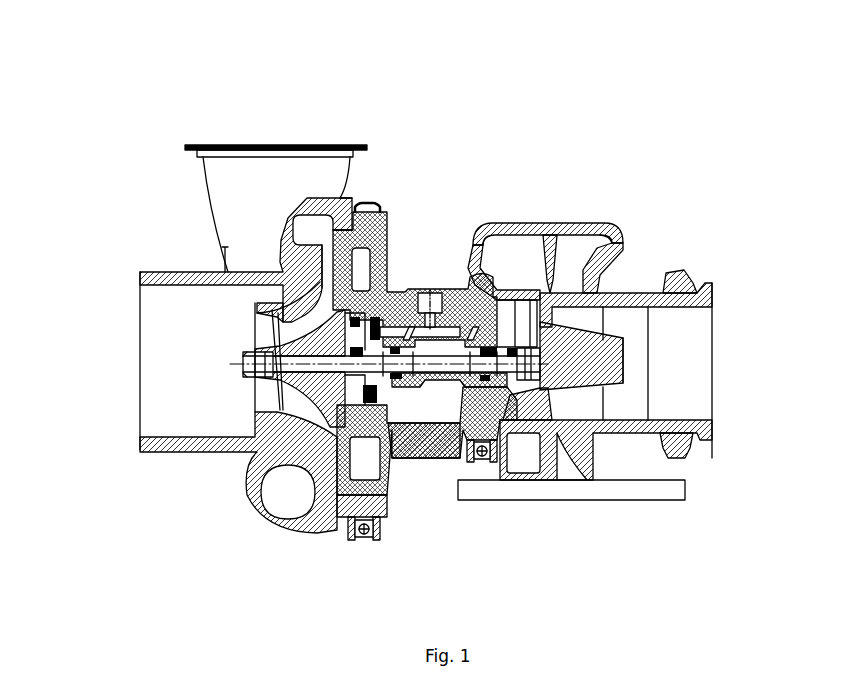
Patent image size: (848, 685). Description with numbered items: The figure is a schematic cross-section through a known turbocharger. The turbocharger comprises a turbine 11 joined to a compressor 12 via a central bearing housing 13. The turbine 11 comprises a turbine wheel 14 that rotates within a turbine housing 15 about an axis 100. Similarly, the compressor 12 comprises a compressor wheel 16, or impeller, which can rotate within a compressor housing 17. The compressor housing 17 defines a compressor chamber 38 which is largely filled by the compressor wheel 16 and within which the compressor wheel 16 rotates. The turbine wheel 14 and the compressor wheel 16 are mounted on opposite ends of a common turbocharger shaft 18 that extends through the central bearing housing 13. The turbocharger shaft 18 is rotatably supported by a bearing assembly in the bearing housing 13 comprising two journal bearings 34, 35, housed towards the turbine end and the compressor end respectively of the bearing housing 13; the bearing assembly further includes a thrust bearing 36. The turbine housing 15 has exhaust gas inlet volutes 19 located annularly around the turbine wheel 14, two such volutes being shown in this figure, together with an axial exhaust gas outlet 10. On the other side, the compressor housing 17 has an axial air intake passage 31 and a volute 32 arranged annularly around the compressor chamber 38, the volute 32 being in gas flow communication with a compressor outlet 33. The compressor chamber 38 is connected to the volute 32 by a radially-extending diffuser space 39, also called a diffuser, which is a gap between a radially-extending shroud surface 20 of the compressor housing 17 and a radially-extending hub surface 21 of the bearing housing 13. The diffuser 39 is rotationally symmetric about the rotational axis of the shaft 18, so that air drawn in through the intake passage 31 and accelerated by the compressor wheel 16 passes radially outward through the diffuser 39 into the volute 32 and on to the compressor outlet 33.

The axial exhaust gas outlet 10 is at (637, 330).
The turbine 11 is at (575, 190).
The compressor 12 is at (170, 493).
The central bearing housing 13 is at (412, 266).
The turbine wheel 14 is at (556, 340).
The turbine housing 15 is at (662, 433).
The compressor wheel 16 is at (243, 352).
The compressor housing 17 is at (277, 268).
The turbocharger shaft 18 is at (458, 378).
The exhaust gas inlet volute 19 is at (593, 243).
The shroud surface 20 is at (315, 250).
The hub surface 21 is at (340, 212).
The axial air intake passage 31 is at (162, 312).
The volute 32 is at (302, 222).
The compressor outlet 33 is at (215, 146).
The journal bearing 34 is at (493, 372).
The journal bearing 35 is at (403, 377).
The thrust bearing 36 is at (378, 312).
The compressor chamber 38 is at (287, 312).
The diffuser space 39 is at (333, 228).
The axis 100 is at (633, 363).